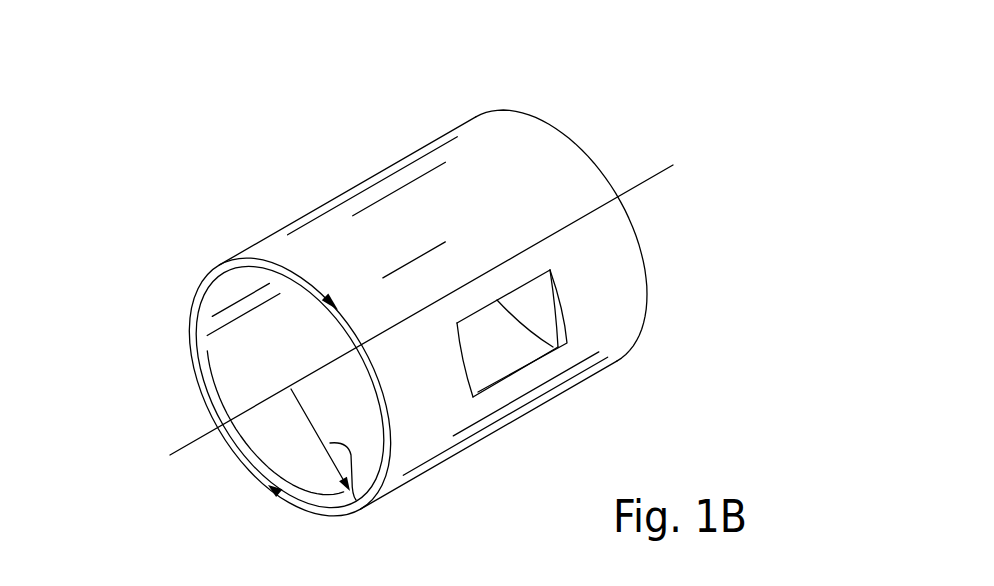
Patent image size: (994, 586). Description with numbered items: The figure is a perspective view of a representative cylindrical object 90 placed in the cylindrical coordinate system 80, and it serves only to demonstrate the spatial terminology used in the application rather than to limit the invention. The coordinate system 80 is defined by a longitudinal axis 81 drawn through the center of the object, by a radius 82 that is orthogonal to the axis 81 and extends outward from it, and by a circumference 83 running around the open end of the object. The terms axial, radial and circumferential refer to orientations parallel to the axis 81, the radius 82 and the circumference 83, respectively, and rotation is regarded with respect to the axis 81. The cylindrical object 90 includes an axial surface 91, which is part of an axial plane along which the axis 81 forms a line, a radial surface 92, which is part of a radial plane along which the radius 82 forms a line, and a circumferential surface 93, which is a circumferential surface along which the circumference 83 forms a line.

The cylindrical coordinate system 80 is at (587, 126).
The longitudinal axis 81 is at (182, 450).
The radius 82 is at (342, 489).
The circumference 83 is at (197, 290).
The cylindrical object 90 is at (456, 111).
The axial surface 91 is at (537, 352).
The radial surface 92 is at (307, 503).
The circumferential surface 93 is at (396, 210).